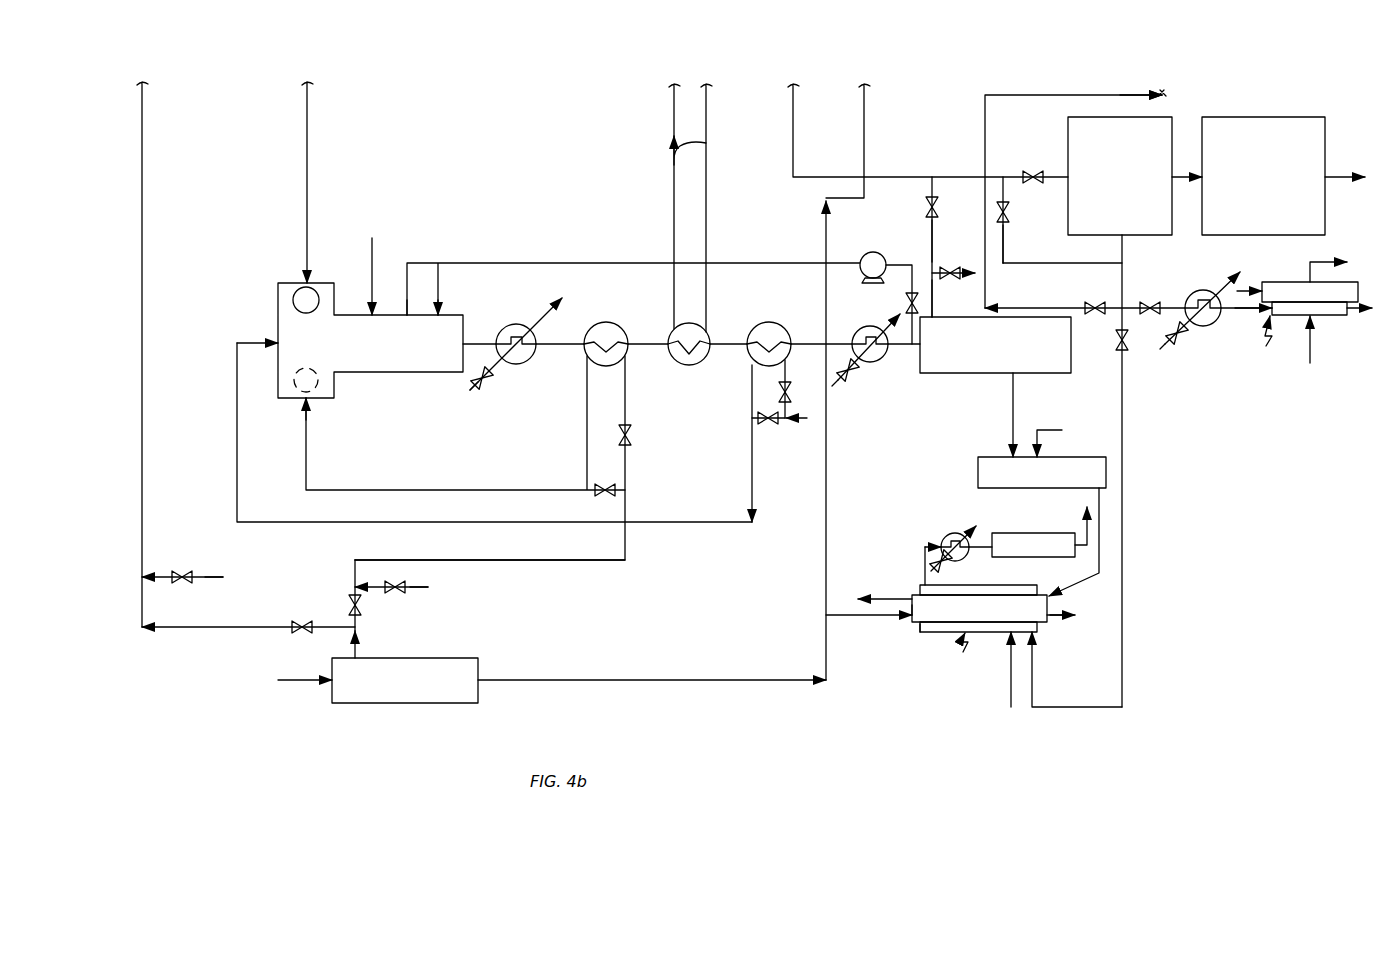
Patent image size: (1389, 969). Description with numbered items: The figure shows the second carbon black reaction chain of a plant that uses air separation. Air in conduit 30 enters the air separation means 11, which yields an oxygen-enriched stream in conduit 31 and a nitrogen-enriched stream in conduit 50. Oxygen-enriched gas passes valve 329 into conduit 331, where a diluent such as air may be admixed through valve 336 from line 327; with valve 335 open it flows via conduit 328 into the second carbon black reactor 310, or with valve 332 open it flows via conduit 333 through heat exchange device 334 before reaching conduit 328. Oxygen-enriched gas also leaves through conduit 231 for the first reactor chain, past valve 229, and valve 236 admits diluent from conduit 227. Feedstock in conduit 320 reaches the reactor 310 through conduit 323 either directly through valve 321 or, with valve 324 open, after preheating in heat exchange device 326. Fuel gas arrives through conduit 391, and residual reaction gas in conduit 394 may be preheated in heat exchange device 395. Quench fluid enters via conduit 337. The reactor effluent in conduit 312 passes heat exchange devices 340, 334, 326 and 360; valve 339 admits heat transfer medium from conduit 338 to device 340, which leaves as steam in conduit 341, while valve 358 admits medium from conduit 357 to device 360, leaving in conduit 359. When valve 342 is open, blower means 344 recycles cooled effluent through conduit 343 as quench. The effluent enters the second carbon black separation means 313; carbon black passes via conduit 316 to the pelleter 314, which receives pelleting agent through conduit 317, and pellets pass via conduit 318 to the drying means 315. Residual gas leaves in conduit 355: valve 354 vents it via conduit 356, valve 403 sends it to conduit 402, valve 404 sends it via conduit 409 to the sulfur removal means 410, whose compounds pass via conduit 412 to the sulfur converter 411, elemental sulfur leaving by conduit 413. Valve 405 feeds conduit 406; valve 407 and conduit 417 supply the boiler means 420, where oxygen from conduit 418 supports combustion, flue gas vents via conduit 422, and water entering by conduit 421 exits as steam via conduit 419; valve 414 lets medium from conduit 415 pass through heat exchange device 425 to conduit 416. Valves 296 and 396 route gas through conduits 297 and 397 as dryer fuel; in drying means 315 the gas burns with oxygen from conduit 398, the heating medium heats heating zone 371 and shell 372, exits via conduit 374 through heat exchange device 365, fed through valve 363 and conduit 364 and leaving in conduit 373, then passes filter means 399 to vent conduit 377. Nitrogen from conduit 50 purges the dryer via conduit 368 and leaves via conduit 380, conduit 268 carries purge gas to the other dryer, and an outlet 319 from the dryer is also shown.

The air separation means 11 is at (400, 703).
The conduit 30 is at (295, 681).
The conduit 31 is at (355, 646).
The conduit 50 is at (655, 680).
The conduit 227 is at (223, 577).
The valve 229 is at (291, 624).
The conduit 231 is at (142, 117).
The valve 236 is at (186, 571).
The conduit 268 is at (864, 128).
The valve 296 is at (1089, 306).
The conduit 297 is at (985, 140).
The second carbon black reactor 310 is at (258, 281).
The conduit 312 is at (474, 338).
The second carbon black separation means 313 is at (945, 373).
The second pelleter 314 is at (978, 472).
The second drying means 315 is at (963, 650).
The conduit 316 is at (1013, 404).
The conduit 317 is at (1052, 430).
The conduit 318 is at (1077, 554).
The line 319 is at (894, 588).
The conduit 320 is at (805, 420).
The valve 321 is at (772, 424).
The conduit 323 is at (237, 445).
The valve 324 is at (782, 395).
The heat exchange device 326 is at (769, 322).
The line 327 is at (428, 590).
The conduit 328 is at (383, 488).
The valve 329 is at (360, 606).
The conduit 331 is at (560, 562).
The valve 332 is at (630, 440).
The conduit 333 is at (625, 378).
The heat exchange device 334 is at (607, 322).
The valve 335 is at (605, 492).
The valve 336 is at (408, 586).
The conduit 337 is at (372, 247).
The conduit 338 is at (472, 392).
The valve 339 is at (488, 384).
The heat exchange device 340 is at (530, 364).
The conduit 341 is at (546, 318).
The valve 342 is at (902, 296).
The conduit 343 is at (763, 263).
The pump or blower means 344 is at (873, 252).
The valve 354 is at (953, 253).
The conduit 355 is at (932, 238).
The conduit 356 is at (932, 287).
The conduit 357 is at (836, 386).
The valve 358 is at (852, 378).
The conduit 359 is at (887, 328).
The heat exchange device 360 is at (880, 360).
The valve 363 is at (945, 565).
The conduit 364 is at (927, 576).
The heat exchange device 365 is at (950, 534).
The conduit 368 is at (868, 616).
The heating zone 371 is at (926, 632).
The shell 372 is at (914, 618).
The conduit 373 is at (968, 530).
The conduit 374 is at (925, 546).
The conduit 377 is at (1080, 515).
The conduit 380 is at (1055, 620).
The conduit 391 is at (307, 122).
The conduit 394 is at (706, 115).
The heat exchange device 395 is at (689, 365).
The valve 396 is at (1113, 352).
The conduit 397 is at (1122, 452).
The conduit 398 is at (1011, 690).
The filter means 399 is at (1022, 533).
The conduit 402 is at (793, 147).
The valve 403 is at (932, 218).
The valve 404 is at (1008, 204).
The valve 405 is at (1006, 218).
The conduit 406 is at (1109, 281).
The valve 407 is at (1152, 301).
The conduit 409 is at (1038, 170).
The sulfur removal means 410 is at (1168, 117).
The sulfur converter 411 is at (1262, 117).
The conduit 412 is at (1178, 180).
The conduit 413 is at (1337, 175).
The valve 414 is at (1183, 337).
The conduit 415 is at (1163, 349).
The conduit 416 is at (1226, 272).
The conduit 417 is at (1240, 320).
The conduit 418 is at (1310, 355).
The conduit 419 is at (1322, 262).
The boiler means 420 is at (1265, 338).
The conduit 421 is at (1240, 290).
The conduit 422 is at (1352, 315).
The heat exchange device 425 is at (1200, 290).